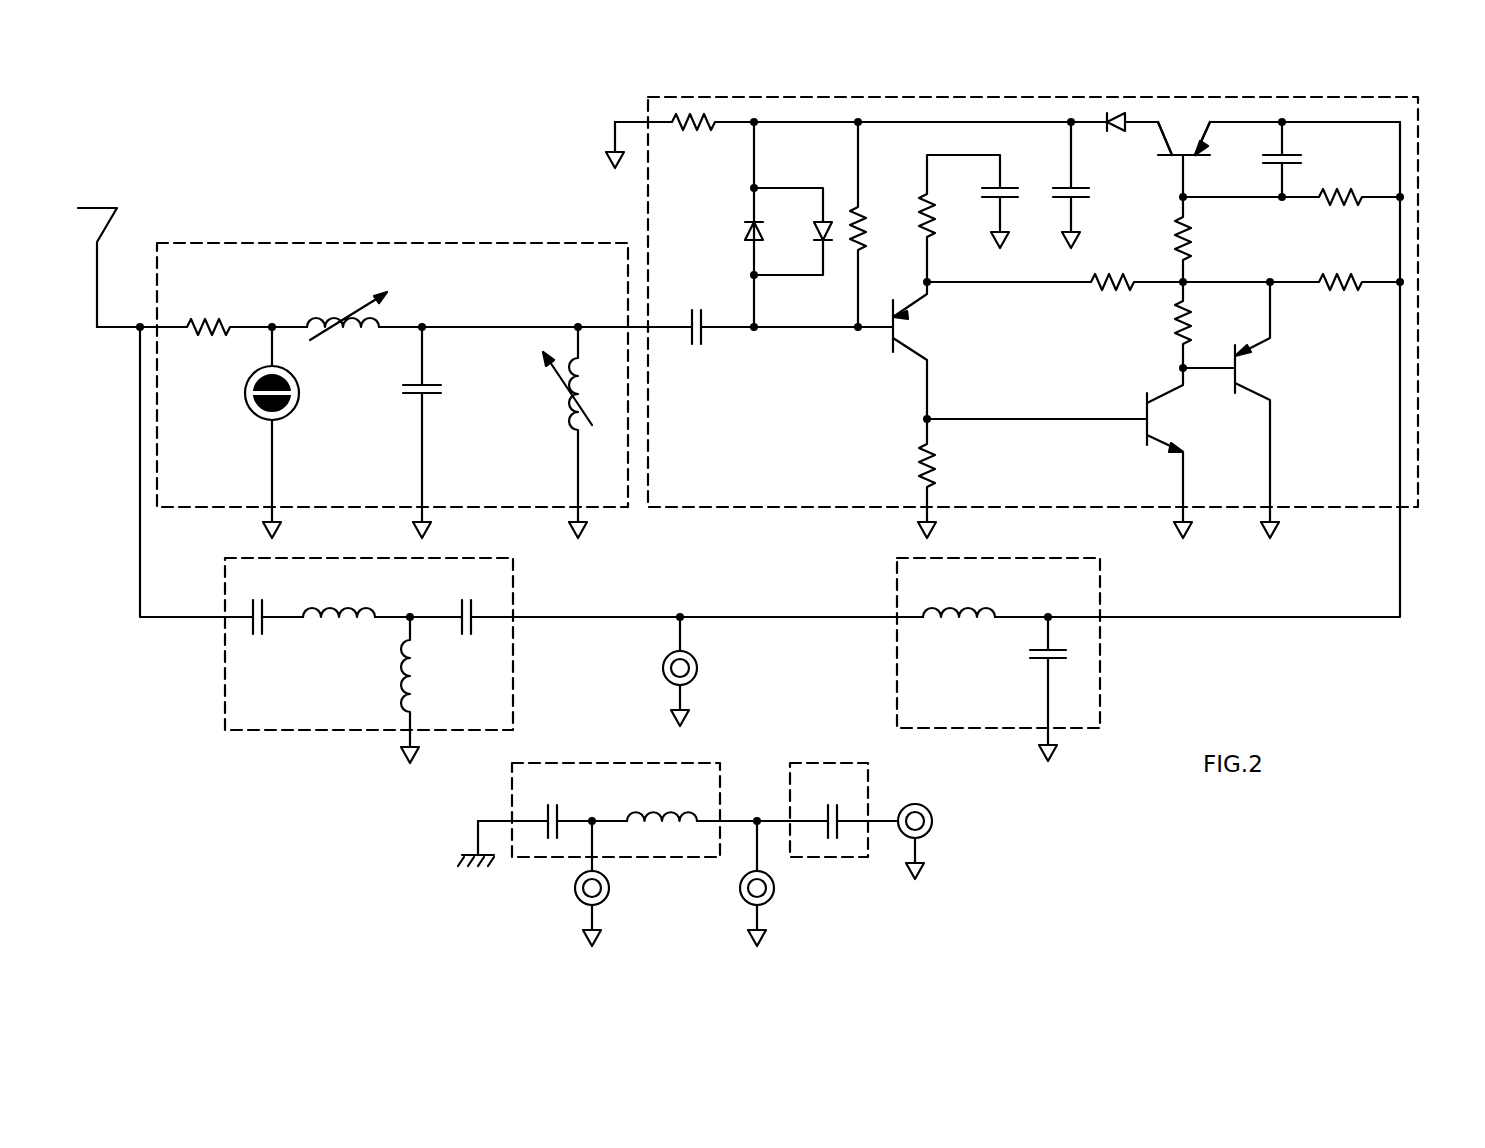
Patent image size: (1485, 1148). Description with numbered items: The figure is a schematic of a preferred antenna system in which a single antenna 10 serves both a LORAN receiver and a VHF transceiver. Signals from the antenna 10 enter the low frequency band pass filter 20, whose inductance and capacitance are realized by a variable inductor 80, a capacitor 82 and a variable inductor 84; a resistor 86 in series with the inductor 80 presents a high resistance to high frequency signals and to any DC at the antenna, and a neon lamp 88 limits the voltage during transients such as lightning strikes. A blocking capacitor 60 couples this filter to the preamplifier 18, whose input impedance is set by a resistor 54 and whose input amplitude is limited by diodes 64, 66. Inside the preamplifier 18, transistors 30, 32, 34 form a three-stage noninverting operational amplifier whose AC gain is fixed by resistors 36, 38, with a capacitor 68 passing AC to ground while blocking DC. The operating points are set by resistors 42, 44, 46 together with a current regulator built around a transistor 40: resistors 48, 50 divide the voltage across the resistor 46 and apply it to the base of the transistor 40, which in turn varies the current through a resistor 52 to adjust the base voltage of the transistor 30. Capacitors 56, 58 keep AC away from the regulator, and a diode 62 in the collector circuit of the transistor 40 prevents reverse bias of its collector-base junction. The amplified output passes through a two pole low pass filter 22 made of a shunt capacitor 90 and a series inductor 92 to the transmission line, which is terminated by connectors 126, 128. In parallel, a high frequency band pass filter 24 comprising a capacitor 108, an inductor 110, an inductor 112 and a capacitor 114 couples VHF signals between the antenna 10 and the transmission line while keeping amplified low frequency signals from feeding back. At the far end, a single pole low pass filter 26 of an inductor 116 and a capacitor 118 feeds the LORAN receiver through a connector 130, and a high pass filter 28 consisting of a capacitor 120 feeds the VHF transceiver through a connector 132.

The antenna 10 is at (98, 292).
The preamplifier 18 is at (1418, 195).
The low frequency band pass filter 20 is at (545, 243).
The low pass filter 22 is at (1100, 600).
The high frequency band pass filter 24 is at (513, 605).
The low pass filter 26 is at (590, 763).
The high pass filter 28 is at (868, 763).
The transistor 30 is at (890, 340).
The transistor 32 is at (1140, 435).
The transistor 34 is at (1225, 387).
The resistor 36 is at (1115, 292).
The resistor 38 is at (940, 215).
The transistor 40 is at (1168, 160).
The resistor 42 is at (935, 480).
The resistor 44 is at (1175, 335).
The resistor 46 is at (1345, 292).
The resistor 48 is at (1345, 205).
The resistor 50 is at (1195, 240).
The resistor 52 is at (712, 135).
The resistor 54 is at (872, 230).
The capacitor 56 is at (1290, 160).
The capacitor 58 is at (1083, 202).
The capacitor 60 is at (705, 337).
The diode 62 is at (1120, 132).
The diode 64 is at (745, 237).
The diode 66 is at (816, 235).
The capacitor 68 is at (1016, 190).
The variable inductor 80 is at (340, 305).
The capacitor 82 is at (410, 400).
The variable inductor 84 is at (560, 408).
The resistor 86 is at (224, 322).
The neon lamp 88 is at (248, 402).
The shunt capacitor 90 is at (1038, 660).
The series inductor 92 is at (950, 602).
The capacitor 108 is at (290, 590).
The inductor 110 is at (335, 603).
The inductor 112 is at (395, 660).
The capacitor 114 is at (478, 630).
The inductor 116 is at (698, 806).
The capacitor 118 is at (588, 795).
The capacitor 120 is at (845, 816).
The connector 126 is at (698, 660).
The connector 128 is at (775, 880).
The connector 130 is at (577, 900).
The connector 132 is at (932, 825).